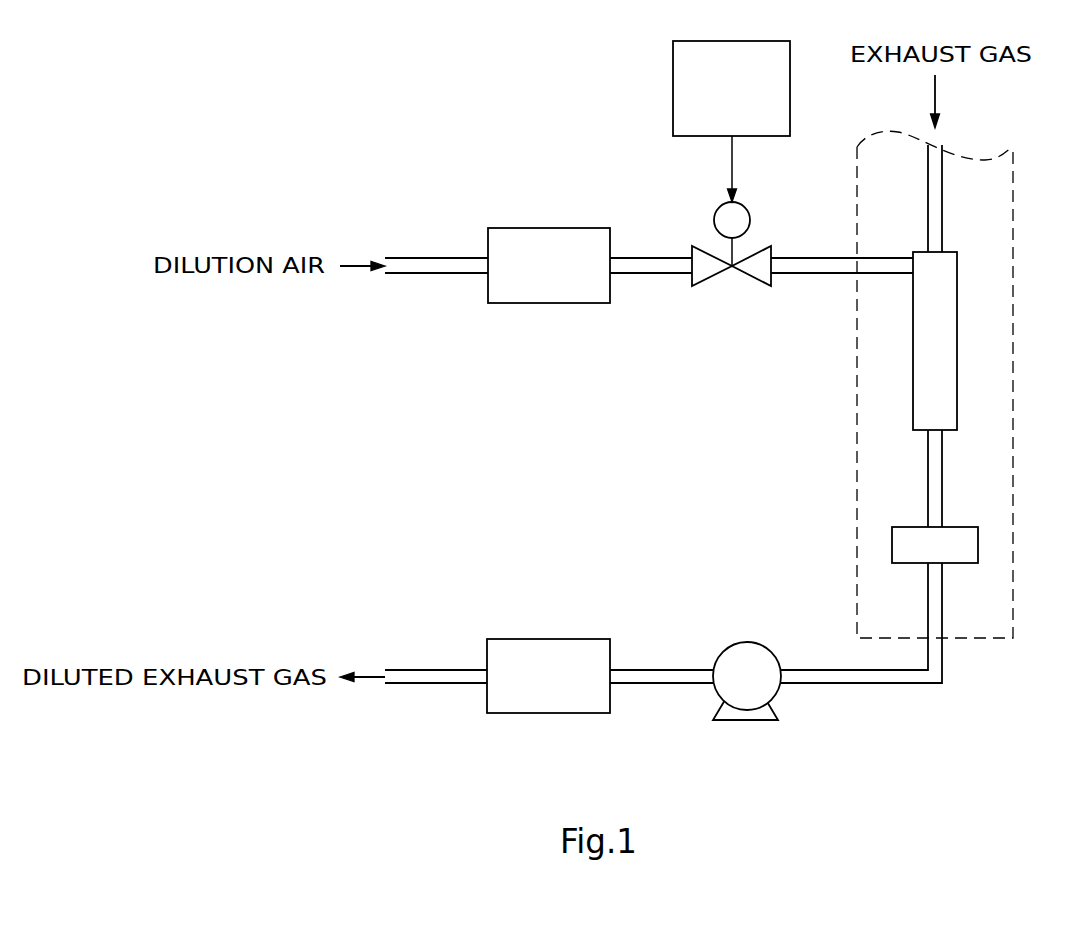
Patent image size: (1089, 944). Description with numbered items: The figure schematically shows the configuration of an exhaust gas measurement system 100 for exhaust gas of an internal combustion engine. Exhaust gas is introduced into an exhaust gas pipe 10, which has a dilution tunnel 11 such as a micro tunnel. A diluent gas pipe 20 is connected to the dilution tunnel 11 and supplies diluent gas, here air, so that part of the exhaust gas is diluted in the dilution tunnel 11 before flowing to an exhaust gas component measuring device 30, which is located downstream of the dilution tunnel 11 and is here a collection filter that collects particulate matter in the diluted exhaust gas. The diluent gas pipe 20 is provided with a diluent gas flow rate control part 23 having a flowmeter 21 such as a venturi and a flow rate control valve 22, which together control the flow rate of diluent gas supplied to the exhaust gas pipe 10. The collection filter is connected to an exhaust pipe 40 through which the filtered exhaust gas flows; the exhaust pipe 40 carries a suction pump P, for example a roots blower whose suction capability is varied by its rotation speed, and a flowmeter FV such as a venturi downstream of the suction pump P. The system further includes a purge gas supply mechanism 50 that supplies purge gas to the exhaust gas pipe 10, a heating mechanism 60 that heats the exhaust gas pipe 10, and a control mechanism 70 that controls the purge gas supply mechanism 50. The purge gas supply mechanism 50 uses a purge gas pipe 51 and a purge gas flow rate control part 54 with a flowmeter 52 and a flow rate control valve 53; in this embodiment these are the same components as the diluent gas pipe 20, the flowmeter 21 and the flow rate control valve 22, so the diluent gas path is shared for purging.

The exhaust gas measurement system 100 is at (342, 172).
The exhaust gas pipe 10 is at (942, 205).
The dilution tunnel 11 is at (957, 340).
The diluent gas pipe 20 is at (649, 222).
The purge gas pipe 51 is at (448, 256).
The flowmeter 21 is at (549, 296).
The flowmeter 52 is at (548, 303).
The flow rate control valve 22 is at (728, 283).
The flow rate control valve 53 is at (720, 290).
The diluent gas flow rate control part 23 is at (528, 432).
The purge gas flow rate control part 54 is at (566, 404).
The exhaust gas component measuring device 30 is at (978, 545).
The exhaust pipe 40 is at (890, 686).
The purge gas supply mechanism 50 is at (644, 319).
The heating mechanism 60 is at (1013, 275).
The control mechanism 70 is at (673, 90).
The suction pump P is at (745, 720).
The flowmeter FV is at (548, 713).